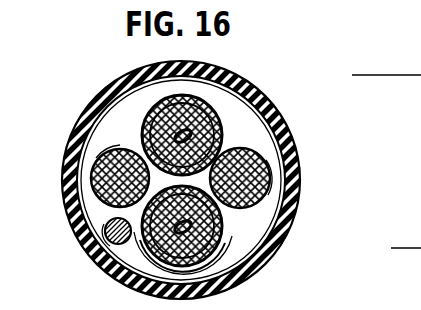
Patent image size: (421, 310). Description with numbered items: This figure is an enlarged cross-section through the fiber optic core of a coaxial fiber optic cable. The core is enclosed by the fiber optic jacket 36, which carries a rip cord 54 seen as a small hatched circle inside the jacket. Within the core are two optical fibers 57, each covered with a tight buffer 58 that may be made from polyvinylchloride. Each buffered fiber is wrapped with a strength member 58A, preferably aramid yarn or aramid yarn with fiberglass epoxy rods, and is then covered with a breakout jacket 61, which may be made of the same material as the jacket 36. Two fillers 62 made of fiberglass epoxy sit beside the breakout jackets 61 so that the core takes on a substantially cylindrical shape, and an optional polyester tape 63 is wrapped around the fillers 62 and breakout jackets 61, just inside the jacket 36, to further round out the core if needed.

The fiber optic jacket 36 is at (96, 102).
The polyester tape 63 is at (241, 95).
The optical fiber 57 is at (270, 185).
The filler 62 is at (89, 150).
The breakout jacket 61 is at (192, 137).
The tight buffer 58 is at (195, 232).
The strength member 58A is at (252, 268).
The rip cord 54 is at (104, 243).